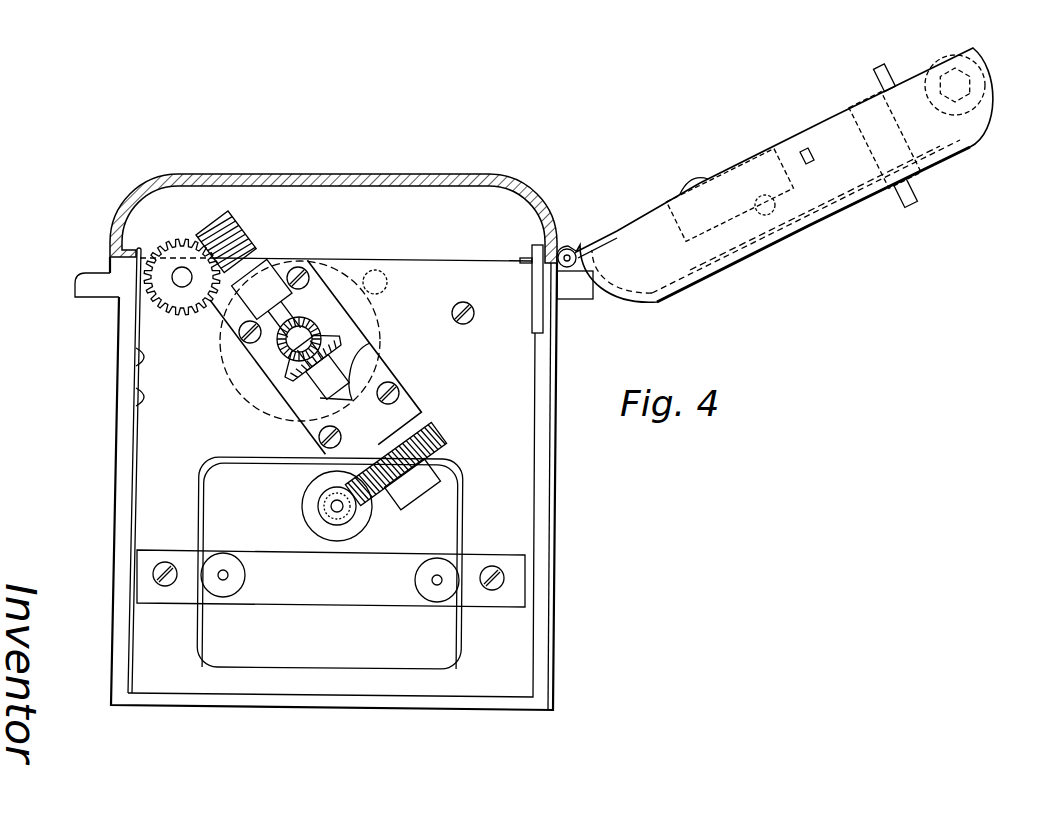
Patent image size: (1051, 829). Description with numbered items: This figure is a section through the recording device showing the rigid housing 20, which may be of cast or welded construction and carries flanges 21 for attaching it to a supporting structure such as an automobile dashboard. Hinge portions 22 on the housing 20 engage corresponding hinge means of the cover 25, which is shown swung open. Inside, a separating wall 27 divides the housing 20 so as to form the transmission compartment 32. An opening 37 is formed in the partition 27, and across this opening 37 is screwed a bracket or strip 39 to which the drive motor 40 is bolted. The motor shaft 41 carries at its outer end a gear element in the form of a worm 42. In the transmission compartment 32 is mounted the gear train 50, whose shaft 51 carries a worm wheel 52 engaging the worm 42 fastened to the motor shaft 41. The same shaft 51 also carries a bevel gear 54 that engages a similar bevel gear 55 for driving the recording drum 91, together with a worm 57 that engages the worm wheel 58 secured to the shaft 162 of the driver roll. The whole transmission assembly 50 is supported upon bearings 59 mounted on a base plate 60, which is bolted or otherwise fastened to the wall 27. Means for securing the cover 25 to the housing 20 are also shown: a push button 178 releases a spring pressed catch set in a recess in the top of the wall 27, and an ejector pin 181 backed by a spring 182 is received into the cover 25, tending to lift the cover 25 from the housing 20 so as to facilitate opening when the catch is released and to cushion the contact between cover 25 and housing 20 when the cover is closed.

The housing 20 is at (545, 492).
The flanges 21 is at (82, 297).
The hinge portions 22 is at (573, 249).
The cover 25 is at (648, 297).
The separating wall 27 is at (150, 434).
The transmission compartment 32 is at (505, 474).
The opening 37 is at (448, 690).
The bracket or strip 39 is at (353, 586).
The drive motor 40 is at (273, 657).
The motor shaft 41 is at (331, 507).
The worm 42 is at (357, 519).
The gear train 50 is at (407, 376).
The shaft 51 is at (410, 418).
The worm gear or wheel 52 is at (446, 424).
The bevel gear 54 is at (292, 384).
The bevel gear 55 is at (277, 350).
The worm 57 is at (238, 257).
The worm wheel 58 is at (166, 242).
The bearings 59 is at (265, 283).
The base plate 60 is at (402, 407).
The recording drum 91 is at (374, 271).
The shaft 162 is at (180, 278).
The push button 178 is at (910, 190).
The ejector pin 181 is at (894, 72).
The spring 182 is at (956, 157).